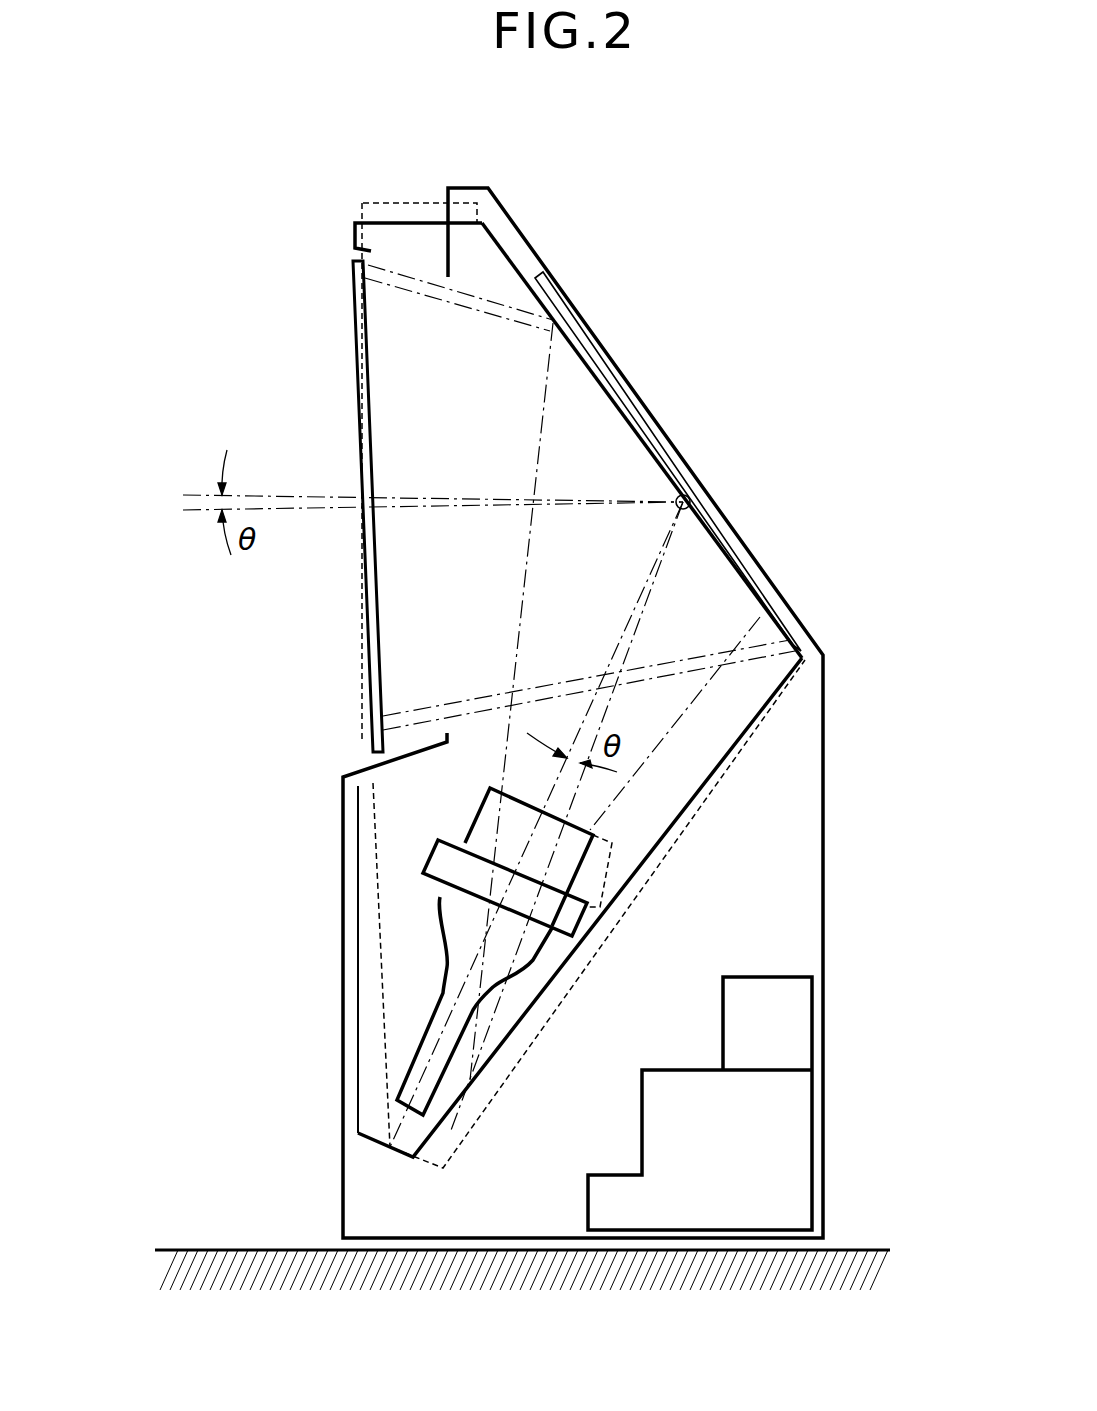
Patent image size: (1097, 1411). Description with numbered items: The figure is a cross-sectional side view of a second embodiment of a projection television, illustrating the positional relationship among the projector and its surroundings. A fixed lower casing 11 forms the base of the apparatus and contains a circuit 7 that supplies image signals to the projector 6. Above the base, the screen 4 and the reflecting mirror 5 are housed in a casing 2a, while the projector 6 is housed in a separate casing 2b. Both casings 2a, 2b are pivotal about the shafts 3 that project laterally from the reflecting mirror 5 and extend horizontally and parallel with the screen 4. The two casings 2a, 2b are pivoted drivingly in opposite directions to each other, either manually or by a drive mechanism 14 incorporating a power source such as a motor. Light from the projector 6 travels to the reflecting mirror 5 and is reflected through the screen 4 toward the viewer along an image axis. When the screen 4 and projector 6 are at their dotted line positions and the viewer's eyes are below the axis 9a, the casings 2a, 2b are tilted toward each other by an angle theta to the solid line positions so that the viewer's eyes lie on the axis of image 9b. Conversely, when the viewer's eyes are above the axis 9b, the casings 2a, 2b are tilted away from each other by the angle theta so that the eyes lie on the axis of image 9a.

The casing 2a is at (353, 237).
The casing 2b is at (433, 1137).
The shaft 3 is at (688, 497).
The screen 4 is at (355, 325).
The reflecting mirror 5 is at (628, 405).
The projector 6 is at (533, 960).
The circuit 7 is at (778, 1068).
The axis of image 9a is at (248, 493).
The axis of image 9b is at (320, 512).
The lower casing 11 is at (823, 767).
The drive mechanism 14 is at (773, 997).